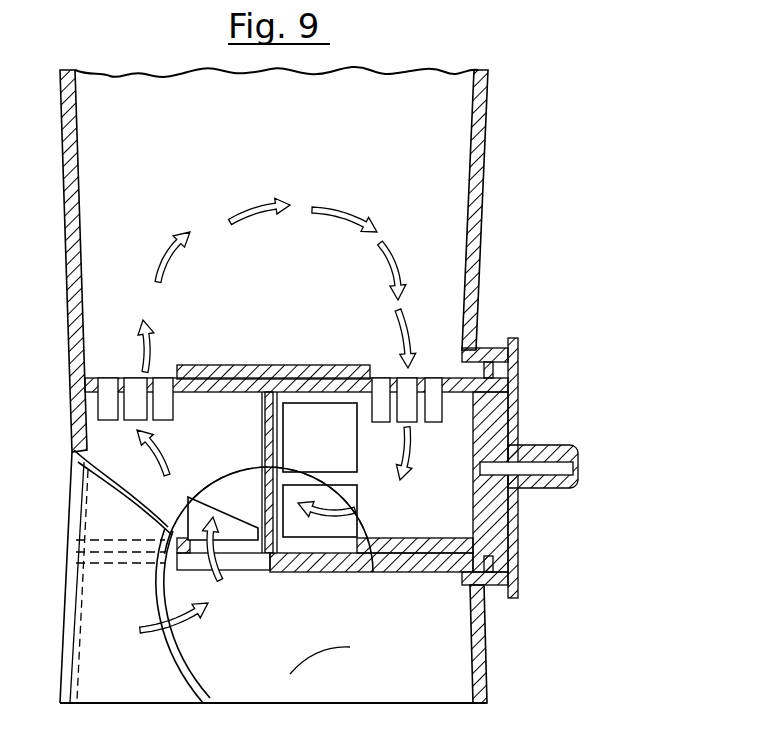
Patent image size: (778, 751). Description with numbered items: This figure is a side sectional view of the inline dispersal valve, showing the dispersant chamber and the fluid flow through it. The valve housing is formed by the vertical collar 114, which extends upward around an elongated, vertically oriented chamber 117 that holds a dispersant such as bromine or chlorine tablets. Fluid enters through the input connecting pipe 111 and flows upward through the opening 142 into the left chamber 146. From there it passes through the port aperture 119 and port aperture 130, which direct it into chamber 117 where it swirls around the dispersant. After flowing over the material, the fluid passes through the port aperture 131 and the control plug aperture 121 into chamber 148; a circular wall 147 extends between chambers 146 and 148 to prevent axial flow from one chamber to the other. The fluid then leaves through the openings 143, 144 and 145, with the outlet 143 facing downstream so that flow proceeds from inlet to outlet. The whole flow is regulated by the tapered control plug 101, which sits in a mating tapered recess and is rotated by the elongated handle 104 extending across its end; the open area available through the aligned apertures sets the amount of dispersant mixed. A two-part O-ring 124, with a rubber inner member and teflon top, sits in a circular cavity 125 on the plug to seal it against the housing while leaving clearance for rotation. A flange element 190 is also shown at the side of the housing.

The control plug 101 is at (528, 413).
The elongated handle 104 is at (580, 452).
The input connecting pipe 111 is at (348, 648).
The vertical collar 114 is at (482, 226).
The dispersant chamber 117 is at (291, 159).
The port aperture 119 is at (165, 378).
The control plug aperture 121 is at (433, 377).
The O-ring 124 is at (438, 573).
The circular cavity 125 is at (462, 546).
The port aperture 130 is at (107, 378).
The port aperture 131 is at (378, 372).
The opening 142 is at (247, 560).
The outlet opening 143 is at (332, 573).
The opening 144 is at (357, 436).
The opening 145 is at (305, 376).
The left chamber 146 is at (214, 476).
The circular wall 147 is at (265, 433).
The chamber 148 is at (456, 475).
The mounting flange 190 is at (488, 350).